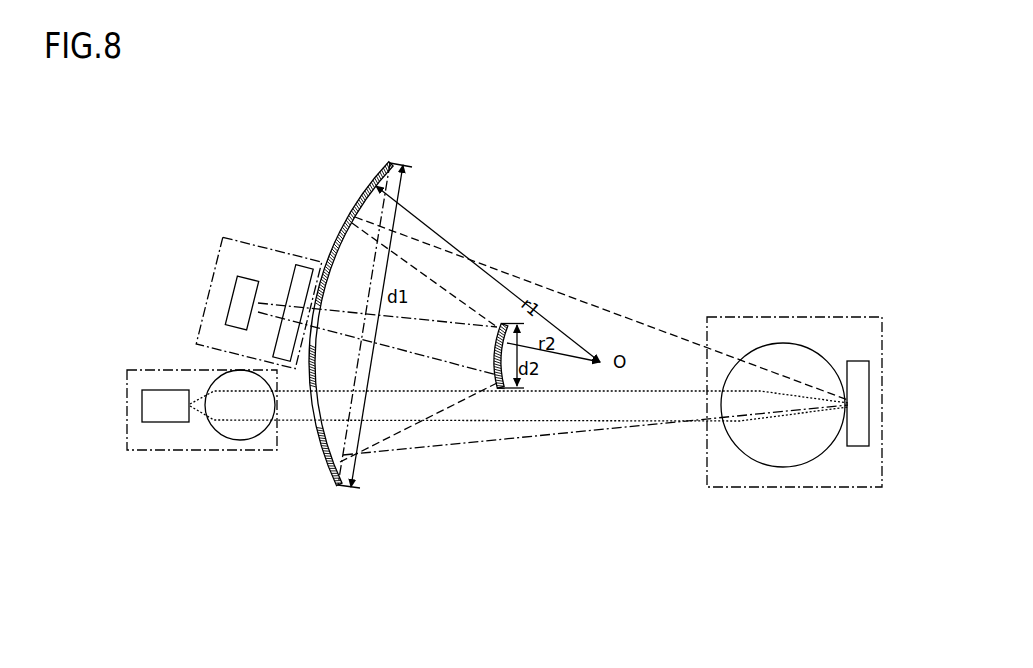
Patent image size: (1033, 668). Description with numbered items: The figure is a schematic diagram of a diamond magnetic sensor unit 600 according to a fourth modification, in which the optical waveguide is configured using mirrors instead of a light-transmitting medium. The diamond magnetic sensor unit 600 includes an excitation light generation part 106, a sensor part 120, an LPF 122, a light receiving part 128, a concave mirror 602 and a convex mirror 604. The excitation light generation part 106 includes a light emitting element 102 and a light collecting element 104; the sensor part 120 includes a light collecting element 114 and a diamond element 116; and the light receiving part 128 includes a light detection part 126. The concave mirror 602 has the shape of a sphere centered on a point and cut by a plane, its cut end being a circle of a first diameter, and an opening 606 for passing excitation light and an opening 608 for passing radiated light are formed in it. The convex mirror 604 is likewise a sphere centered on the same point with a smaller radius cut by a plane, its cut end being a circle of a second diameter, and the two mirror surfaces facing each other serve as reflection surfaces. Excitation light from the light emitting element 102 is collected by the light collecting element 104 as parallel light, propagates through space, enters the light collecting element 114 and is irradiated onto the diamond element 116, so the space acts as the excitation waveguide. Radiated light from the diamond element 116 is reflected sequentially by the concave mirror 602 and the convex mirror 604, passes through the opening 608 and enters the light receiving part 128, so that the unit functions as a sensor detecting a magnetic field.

The diamond magnetic sensor unit 600 is at (745, 137).
The concave mirror 602 is at (362, 183).
The convex mirror 604 is at (494, 358).
The opening 606 is at (308, 412).
The opening 608 is at (324, 343).
The light emitting element 102 is at (170, 424).
The light collecting element 104 is at (240, 440).
The excitation light generation part 106 is at (193, 452).
The light collecting element 114 is at (768, 468).
The diamond element 116 is at (858, 447).
The sensor part 120 is at (795, 317).
The LPF 122 is at (230, 303).
The light detection part 126 is at (292, 282).
The light receiving part 128 is at (202, 318).